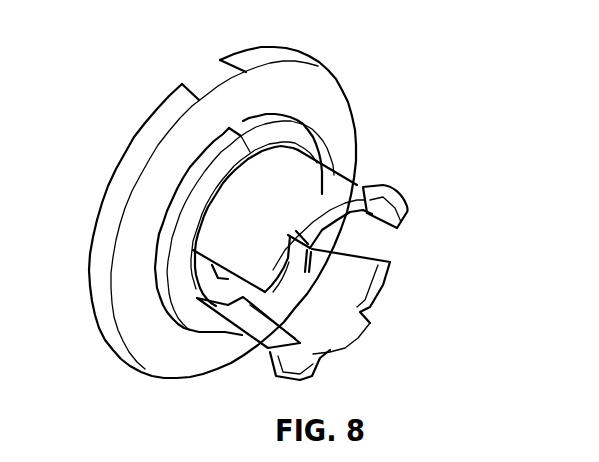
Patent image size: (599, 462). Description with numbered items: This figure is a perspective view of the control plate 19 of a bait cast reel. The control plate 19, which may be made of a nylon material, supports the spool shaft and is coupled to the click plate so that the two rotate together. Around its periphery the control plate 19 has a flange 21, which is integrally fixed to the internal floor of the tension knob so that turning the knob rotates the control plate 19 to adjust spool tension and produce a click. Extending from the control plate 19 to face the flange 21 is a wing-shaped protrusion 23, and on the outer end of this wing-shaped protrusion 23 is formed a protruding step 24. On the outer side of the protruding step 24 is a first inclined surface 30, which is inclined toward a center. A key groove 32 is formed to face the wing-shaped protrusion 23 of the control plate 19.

The control plate 19 is at (203, 195).
The flange 21 is at (123, 198).
The wing-shaped protrusion 23 is at (302, 180).
The protruding step 24 is at (380, 250).
The first inclined surface 30 is at (387, 200).
The key groove 32 is at (380, 238).